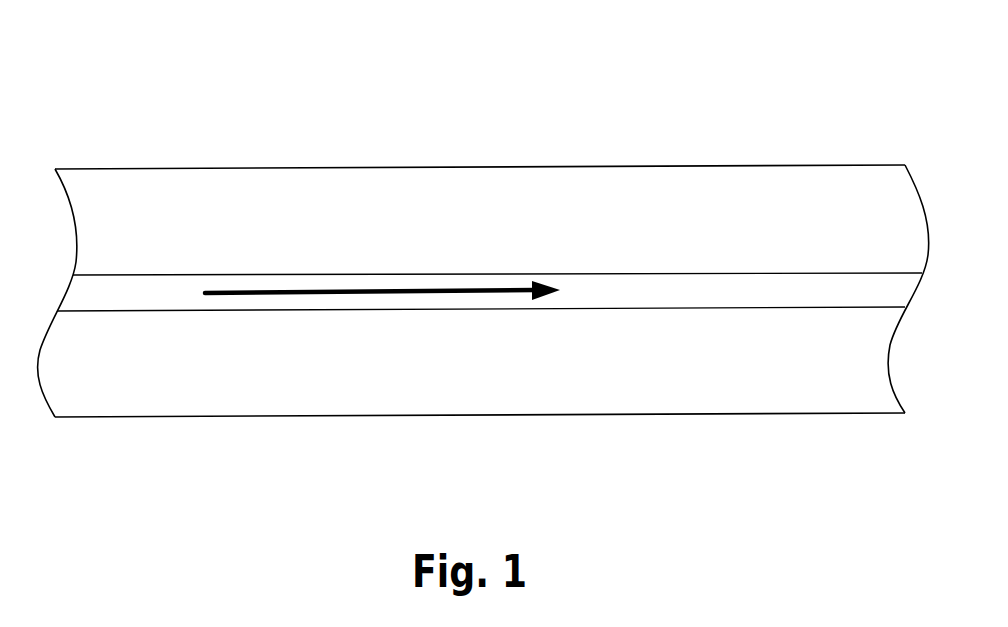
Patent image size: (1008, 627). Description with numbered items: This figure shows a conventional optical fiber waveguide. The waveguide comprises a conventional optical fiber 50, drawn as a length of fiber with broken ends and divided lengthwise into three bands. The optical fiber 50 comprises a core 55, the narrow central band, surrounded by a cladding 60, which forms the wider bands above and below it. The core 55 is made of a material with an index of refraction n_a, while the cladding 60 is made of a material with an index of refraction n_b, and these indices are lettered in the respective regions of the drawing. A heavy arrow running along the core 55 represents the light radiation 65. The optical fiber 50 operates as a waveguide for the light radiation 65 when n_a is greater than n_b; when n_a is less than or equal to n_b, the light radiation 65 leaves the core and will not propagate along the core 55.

The optical fiber 50 is at (455, 60).
The core 55 is at (773, 290).
The cladding 60 is at (772, 183).
The light radiation 65 is at (400, 287).